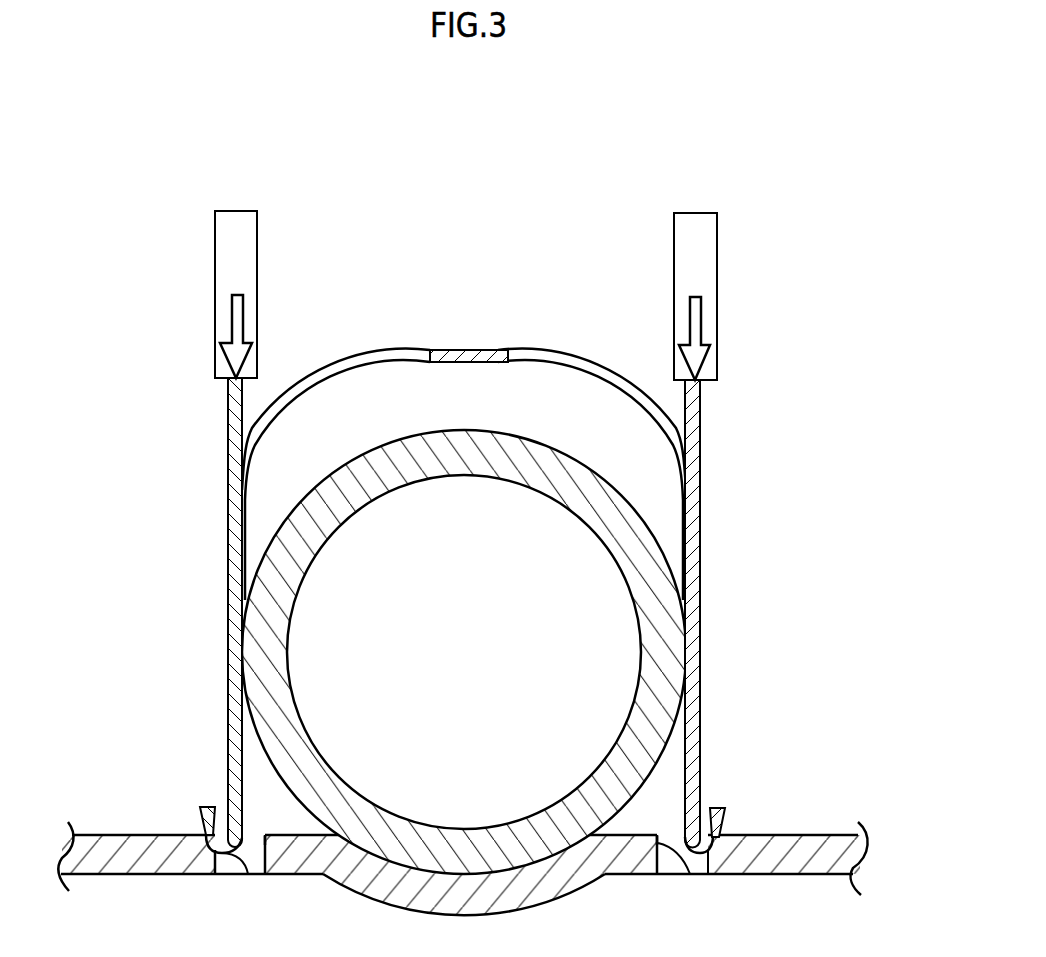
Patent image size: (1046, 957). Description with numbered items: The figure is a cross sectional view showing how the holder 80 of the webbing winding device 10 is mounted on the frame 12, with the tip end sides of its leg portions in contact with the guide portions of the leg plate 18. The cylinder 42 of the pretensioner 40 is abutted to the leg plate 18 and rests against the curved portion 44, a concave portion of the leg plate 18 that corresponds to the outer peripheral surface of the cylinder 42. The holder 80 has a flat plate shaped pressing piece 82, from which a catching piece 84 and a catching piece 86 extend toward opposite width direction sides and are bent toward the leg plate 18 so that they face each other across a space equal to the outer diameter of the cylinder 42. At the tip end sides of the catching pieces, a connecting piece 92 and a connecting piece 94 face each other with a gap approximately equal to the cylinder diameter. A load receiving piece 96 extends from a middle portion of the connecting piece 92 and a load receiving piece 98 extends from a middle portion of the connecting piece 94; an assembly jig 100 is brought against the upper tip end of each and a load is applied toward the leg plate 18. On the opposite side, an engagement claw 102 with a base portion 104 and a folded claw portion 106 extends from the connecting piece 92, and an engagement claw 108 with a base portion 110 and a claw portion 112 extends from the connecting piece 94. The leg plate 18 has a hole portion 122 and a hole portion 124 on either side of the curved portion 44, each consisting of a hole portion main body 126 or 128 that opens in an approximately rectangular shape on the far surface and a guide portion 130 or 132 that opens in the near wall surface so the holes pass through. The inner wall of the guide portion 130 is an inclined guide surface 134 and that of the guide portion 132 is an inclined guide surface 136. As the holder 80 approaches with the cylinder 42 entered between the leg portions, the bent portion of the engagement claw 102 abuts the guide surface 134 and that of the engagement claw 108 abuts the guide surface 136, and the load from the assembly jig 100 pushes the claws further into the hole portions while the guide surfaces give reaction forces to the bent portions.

The webbing winding device 10 is at (752, 130).
The frame 12 is at (462, 838).
The leg plate 18 is at (474, 836).
The pretensioner 40 is at (548, 446).
The cylinder 42 is at (464, 624).
The curved portion 44 is at (463, 873).
The holder 80 is at (487, 569).
The pressing piece 82 is at (467, 350).
The catching piece 84 is at (345, 350).
The catching piece 86 is at (570, 350).
The connecting piece 92 is at (227, 662).
The connecting piece 94 is at (703, 658).
The load receiving piece 96 is at (227, 398).
The load receiving piece 98 is at (703, 390).
The assembly jig 100 is at (258, 242).
The engagement claw 102 is at (254, 782).
The base portion 104 is at (252, 832).
The claw portion 106 is at (203, 808).
The engagement claw 108 is at (665, 787).
The base portion 110 is at (683, 823).
The claw portion 112 is at (732, 808).
The hole portion 122 is at (266, 830).
The hole portion 124 is at (662, 812).
The hole portion main body 126 is at (222, 875).
The hole portion main body 128 is at (656, 875).
The guide portion 130 is at (268, 831).
The guide portion 132 is at (690, 875).
The guide surface 134 is at (256, 873).
The guide surface 136 is at (667, 833).